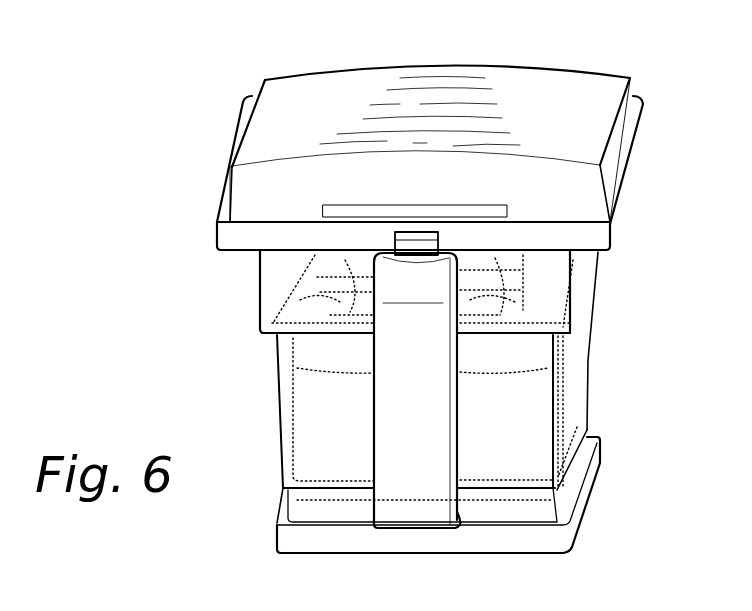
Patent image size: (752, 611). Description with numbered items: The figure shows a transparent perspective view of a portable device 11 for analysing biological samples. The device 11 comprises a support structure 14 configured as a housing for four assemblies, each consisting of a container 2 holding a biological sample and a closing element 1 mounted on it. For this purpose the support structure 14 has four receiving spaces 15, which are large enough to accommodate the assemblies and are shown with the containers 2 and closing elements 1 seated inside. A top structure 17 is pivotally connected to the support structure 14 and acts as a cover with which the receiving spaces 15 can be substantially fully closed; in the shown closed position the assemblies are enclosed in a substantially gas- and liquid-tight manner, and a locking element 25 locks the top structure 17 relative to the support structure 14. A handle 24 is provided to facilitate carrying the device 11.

The portable device 11 is at (228, 86).
The top structure 17 is at (557, 98).
The locking element 25 is at (418, 245).
The closing element 1 is at (332, 265).
The container 2 is at (332, 305).
The receiving space 15 is at (318, 355).
The handle 24 is at (405, 427).
The support structure 14 is at (297, 537).